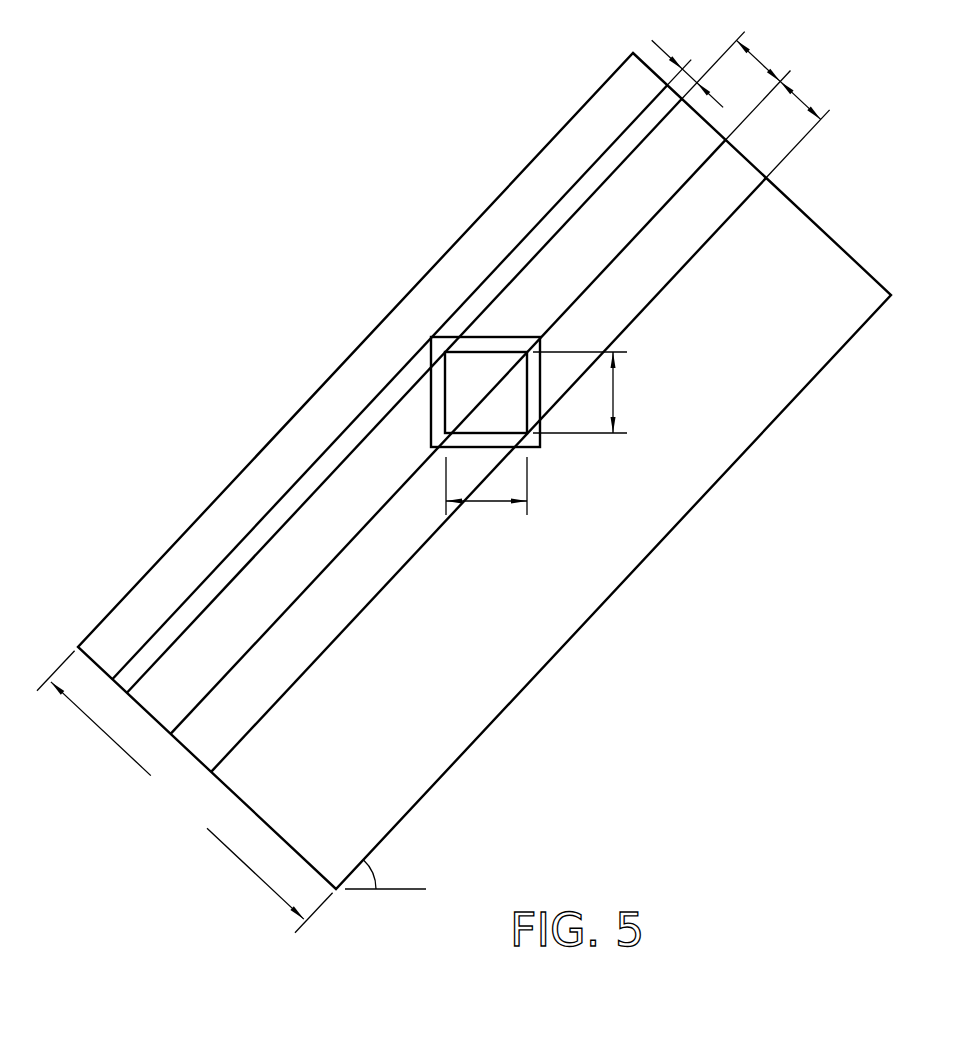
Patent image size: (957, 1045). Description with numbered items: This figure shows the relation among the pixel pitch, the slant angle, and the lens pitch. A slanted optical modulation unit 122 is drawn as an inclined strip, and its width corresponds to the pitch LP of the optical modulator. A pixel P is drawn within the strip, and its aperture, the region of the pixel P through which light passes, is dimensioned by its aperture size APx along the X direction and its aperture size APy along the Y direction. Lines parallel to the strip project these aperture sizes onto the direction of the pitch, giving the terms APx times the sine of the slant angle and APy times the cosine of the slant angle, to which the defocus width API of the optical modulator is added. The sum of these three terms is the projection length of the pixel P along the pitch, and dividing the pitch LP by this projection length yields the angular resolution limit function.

The optical modulation unit 122 is at (542, 152).
The pixel P is at (478, 337).
The pitch of the optical modulator LP is at (185, 792).
The aperture size of the pixel along the X direction APx is at (486, 497).
The aperture size of the pixel along the Y direction APy is at (604, 392).
The defocus width of the optical modulator API is at (698, 68).